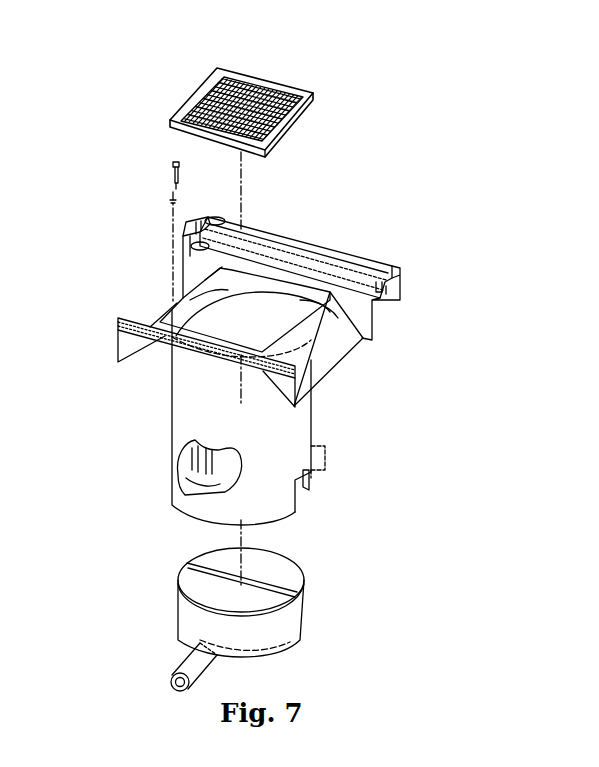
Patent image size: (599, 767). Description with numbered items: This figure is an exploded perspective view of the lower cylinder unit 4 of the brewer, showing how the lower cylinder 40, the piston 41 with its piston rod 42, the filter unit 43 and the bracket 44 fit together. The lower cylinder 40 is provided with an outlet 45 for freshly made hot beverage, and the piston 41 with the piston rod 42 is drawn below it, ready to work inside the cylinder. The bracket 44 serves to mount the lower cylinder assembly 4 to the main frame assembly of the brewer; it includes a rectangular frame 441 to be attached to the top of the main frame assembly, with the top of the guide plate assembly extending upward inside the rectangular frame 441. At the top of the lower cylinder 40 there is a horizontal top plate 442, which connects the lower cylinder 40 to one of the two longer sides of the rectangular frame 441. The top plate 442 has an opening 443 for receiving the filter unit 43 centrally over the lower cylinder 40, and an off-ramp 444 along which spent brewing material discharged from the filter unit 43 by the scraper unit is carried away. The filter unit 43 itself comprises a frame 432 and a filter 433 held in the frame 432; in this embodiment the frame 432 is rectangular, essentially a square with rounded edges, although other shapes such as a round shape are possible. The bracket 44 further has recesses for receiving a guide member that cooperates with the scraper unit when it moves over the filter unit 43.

The lower cylinder unit 4 is at (259, 420).
The lower cylinder 40 is at (190, 380).
The piston 41 is at (192, 590).
The piston rod 42 is at (192, 662).
The filter unit 43 is at (249, 116).
The frame 432 is at (318, 96).
The filter 433 is at (205, 93).
The bracket 44 is at (288, 296).
The rectangular frame 441 is at (365, 258).
The top plate 442 is at (278, 348).
The opening 443 is at (178, 303).
The off-ramp 444 is at (332, 337).
The outlet 45 is at (190, 486).